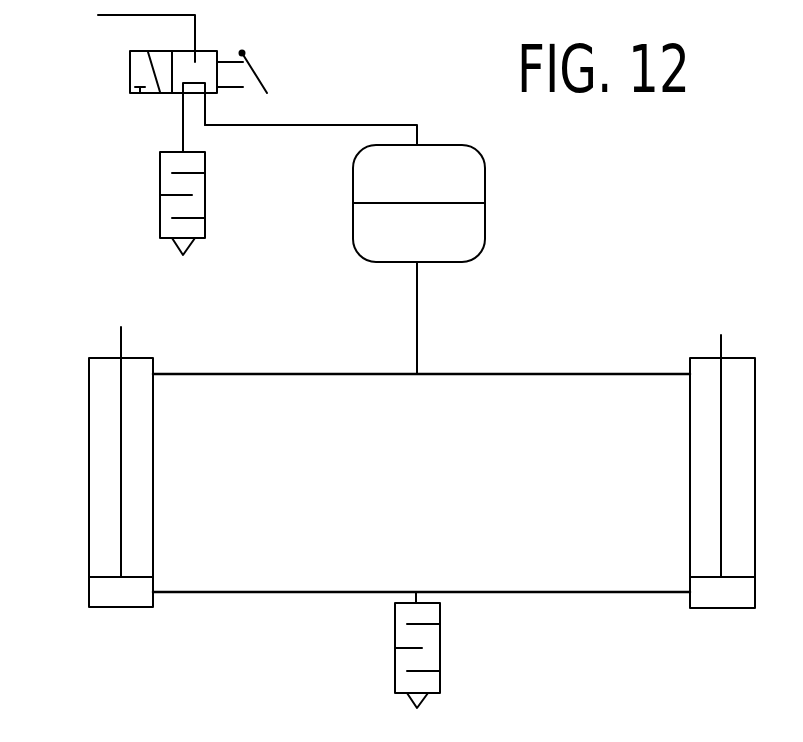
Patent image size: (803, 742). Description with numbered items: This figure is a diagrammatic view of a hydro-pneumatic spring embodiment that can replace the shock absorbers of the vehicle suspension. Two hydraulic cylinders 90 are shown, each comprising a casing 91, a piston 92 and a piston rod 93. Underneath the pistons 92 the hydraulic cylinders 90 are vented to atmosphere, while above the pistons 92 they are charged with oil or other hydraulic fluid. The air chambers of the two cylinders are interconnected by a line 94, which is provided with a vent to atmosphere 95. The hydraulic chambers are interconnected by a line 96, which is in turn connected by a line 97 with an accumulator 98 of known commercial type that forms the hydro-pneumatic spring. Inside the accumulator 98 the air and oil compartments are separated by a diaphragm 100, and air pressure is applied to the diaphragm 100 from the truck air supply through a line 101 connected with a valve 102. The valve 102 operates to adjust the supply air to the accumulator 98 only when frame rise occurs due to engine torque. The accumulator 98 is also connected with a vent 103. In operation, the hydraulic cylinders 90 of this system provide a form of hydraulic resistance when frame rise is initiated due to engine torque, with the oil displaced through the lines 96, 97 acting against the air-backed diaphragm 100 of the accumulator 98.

The hydraulic cylinder 90 is at (393, 467).
The casing 91 is at (89, 535).
The piston 92 is at (97, 577).
The piston rod 93 is at (121, 412).
The line 94 is at (528, 592).
The vent to atmosphere 95 is at (440, 655).
The line 96 is at (470, 374).
The line 97 is at (417, 307).
The accumulator 98 is at (443, 203).
The diaphragm 100 is at (392, 203).
The line 101 is at (327, 125).
The valve 102 is at (130, 66).
The vent 103 is at (160, 200).